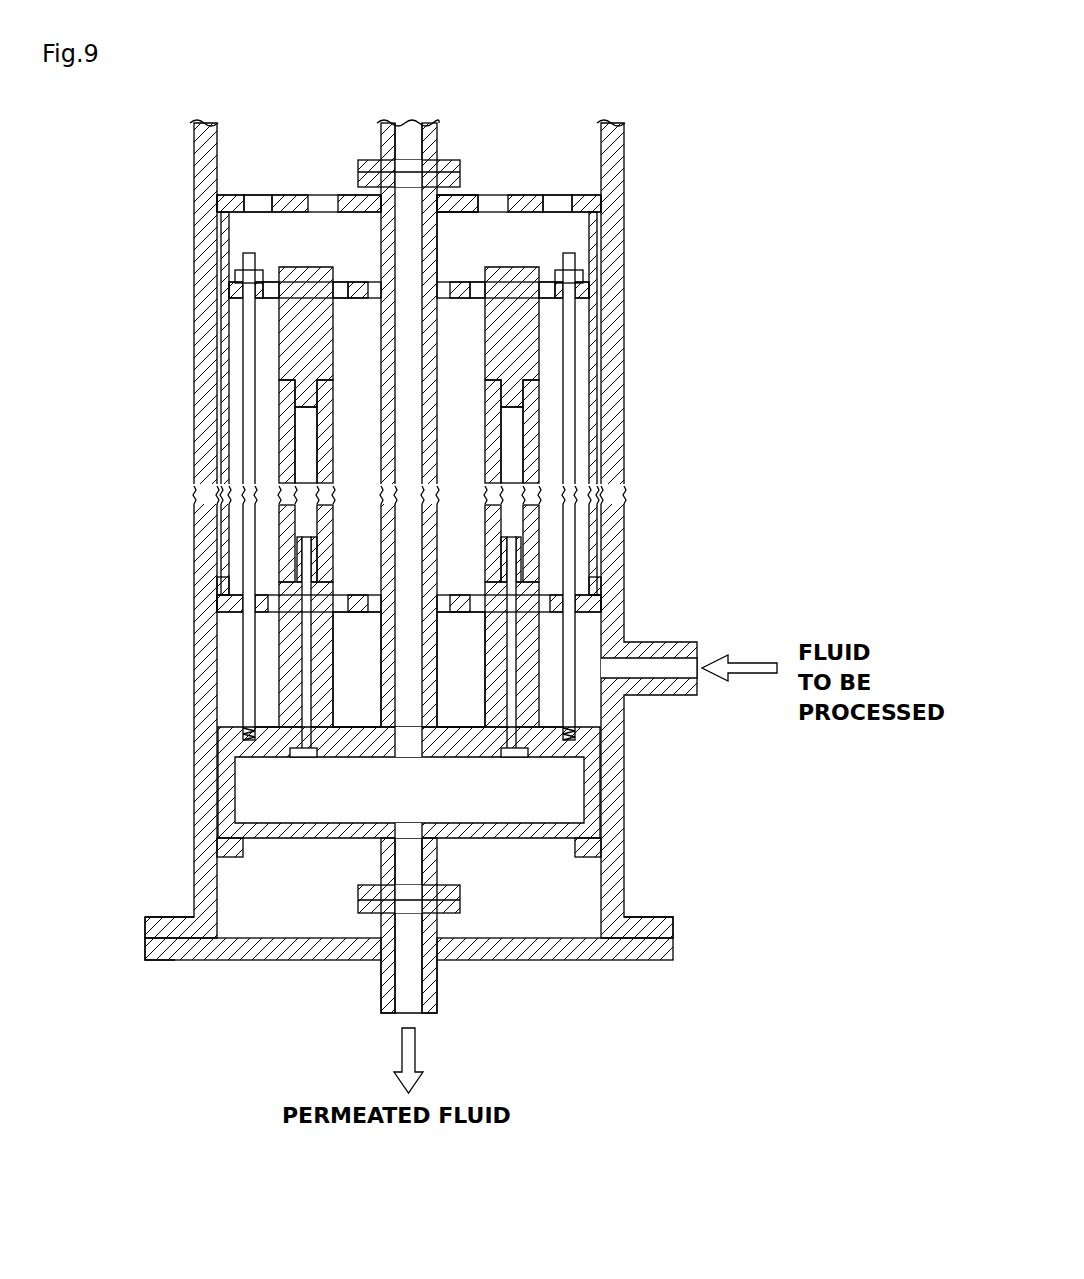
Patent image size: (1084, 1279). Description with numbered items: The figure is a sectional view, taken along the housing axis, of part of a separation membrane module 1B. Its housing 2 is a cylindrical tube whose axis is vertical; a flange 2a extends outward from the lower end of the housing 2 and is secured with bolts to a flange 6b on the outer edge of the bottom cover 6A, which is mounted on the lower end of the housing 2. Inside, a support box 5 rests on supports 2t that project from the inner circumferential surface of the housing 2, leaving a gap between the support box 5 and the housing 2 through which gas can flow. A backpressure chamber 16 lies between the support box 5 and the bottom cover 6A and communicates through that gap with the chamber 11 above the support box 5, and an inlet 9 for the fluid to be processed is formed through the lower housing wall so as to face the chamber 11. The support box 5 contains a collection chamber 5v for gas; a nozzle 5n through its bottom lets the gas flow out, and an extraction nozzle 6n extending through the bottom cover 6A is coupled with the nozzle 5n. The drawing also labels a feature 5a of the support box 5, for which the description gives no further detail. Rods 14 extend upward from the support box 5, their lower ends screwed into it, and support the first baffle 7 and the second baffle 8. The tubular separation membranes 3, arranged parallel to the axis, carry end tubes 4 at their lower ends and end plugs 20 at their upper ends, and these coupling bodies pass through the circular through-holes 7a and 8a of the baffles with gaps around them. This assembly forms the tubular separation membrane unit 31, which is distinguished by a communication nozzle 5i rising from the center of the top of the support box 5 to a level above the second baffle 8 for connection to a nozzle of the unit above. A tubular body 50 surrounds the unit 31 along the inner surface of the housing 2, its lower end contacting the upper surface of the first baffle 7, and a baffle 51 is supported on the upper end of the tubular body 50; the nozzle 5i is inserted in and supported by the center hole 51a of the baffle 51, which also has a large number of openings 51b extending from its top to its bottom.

The separation membrane module 1B is at (688, 233).
The housing 2 is at (626, 160).
The flange 2a is at (178, 918).
The support 2t is at (232, 858).
The tubular separation membrane 3 is at (333, 463).
The end tube 4 is at (333, 676).
The support box 5 is at (543, 757).
The seal of bottom plate 5a is at (282, 742).
The collection chamber 5v is at (322, 806).
The nozzle 5n is at (440, 125).
The communication nozzle 5i is at (437, 222).
The bottom cover 6A is at (260, 960).
The flange 6b is at (165, 960).
The extraction nozzle 6n is at (380, 985).
The first baffle 7 is at (355, 612).
The through-hole 7a is at (355, 595).
The second baffle 8 is at (356, 282).
The through-hole 8a is at (552, 282).
The inlet 9 is at (684, 642).
The chamber 11 is at (477, 657).
The rod 14 is at (243, 645).
The backpressure chamber 16 is at (507, 922).
The end plug 20 is at (297, 267).
The tubular separation membrane unit 31 is at (268, 420).
The tubular body 50 is at (220, 244).
The baffle 51 is at (296, 196).
The center hole 51a is at (460, 196).
The opening 51b is at (262, 196).